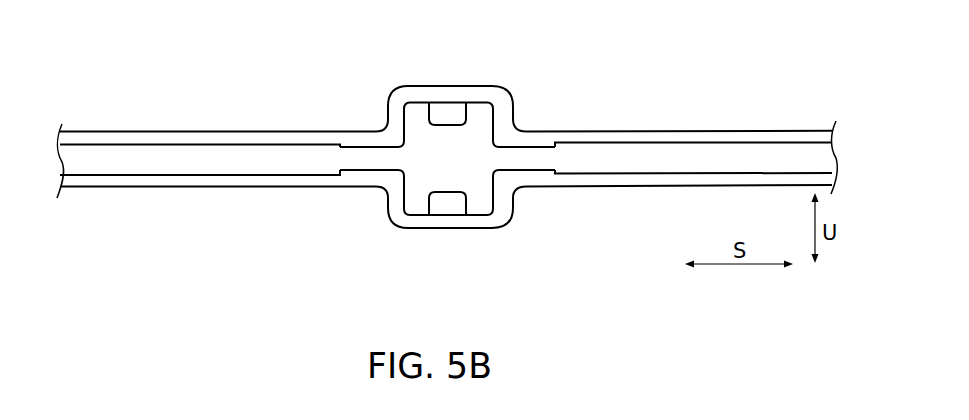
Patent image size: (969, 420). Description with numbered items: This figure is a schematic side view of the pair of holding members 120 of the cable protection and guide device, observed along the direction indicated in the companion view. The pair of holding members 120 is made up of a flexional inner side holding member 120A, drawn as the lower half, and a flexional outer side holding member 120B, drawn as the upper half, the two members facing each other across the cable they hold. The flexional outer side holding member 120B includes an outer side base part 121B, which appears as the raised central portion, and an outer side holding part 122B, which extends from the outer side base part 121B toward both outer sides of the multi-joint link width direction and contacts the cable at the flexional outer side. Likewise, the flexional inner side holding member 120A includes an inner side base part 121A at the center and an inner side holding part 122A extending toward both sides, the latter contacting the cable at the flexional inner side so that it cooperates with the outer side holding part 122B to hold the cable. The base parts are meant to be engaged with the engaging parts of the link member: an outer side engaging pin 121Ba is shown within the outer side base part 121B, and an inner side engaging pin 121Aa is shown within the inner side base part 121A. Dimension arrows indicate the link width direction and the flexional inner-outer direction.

The pair of holding members 120 is at (128, 102).
The flexional outer side holding member 120B is at (415, 40).
The outer side holding part 122B is at (243, 131).
The outer side base part 121B is at (423, 86).
The outer side engaging pin 121Ba is at (457, 115).
The flexional inner side holding member 120A is at (415, 276).
The inner side holding part 122A is at (245, 187).
The inner side base part 121A is at (422, 229).
The inner side engaging pin 121Aa is at (458, 203).